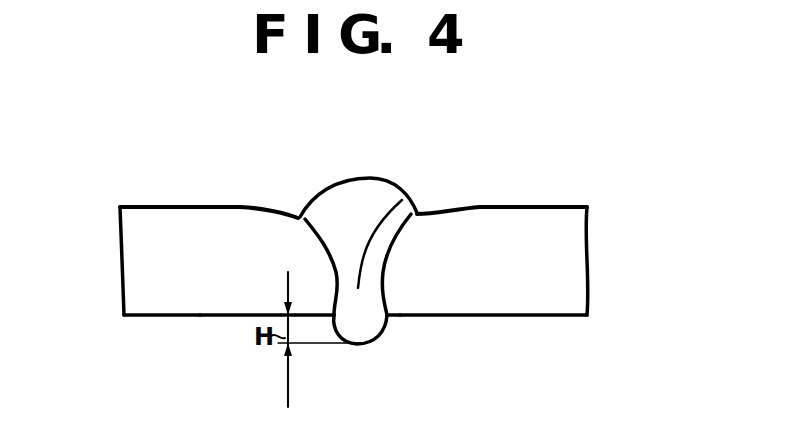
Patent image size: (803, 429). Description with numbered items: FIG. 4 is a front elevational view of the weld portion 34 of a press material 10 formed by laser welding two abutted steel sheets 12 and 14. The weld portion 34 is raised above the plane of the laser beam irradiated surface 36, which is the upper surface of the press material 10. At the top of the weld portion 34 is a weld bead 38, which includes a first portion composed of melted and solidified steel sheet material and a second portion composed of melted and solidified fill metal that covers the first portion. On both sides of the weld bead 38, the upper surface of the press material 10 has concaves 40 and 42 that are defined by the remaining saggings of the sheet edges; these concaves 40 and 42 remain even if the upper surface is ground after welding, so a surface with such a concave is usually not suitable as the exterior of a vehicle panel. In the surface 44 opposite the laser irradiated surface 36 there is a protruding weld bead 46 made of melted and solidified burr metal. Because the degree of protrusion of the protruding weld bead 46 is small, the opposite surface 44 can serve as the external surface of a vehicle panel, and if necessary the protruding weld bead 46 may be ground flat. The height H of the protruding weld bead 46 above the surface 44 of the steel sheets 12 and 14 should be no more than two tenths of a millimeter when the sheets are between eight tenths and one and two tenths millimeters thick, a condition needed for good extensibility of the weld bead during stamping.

The press material 10 is at (484, 206).
The steel sheet 12 is at (150, 230).
The steel sheet 14 is at (511, 294).
The weld portion 34 is at (400, 201).
The laser beam irradiated surface 36 is at (180, 186).
The weld bead 38 is at (354, 191).
The concave 40 is at (296, 216).
The concave 42 is at (452, 206).
The opposite surface 44 is at (194, 316).
The protruding weld bead 46 is at (356, 330).